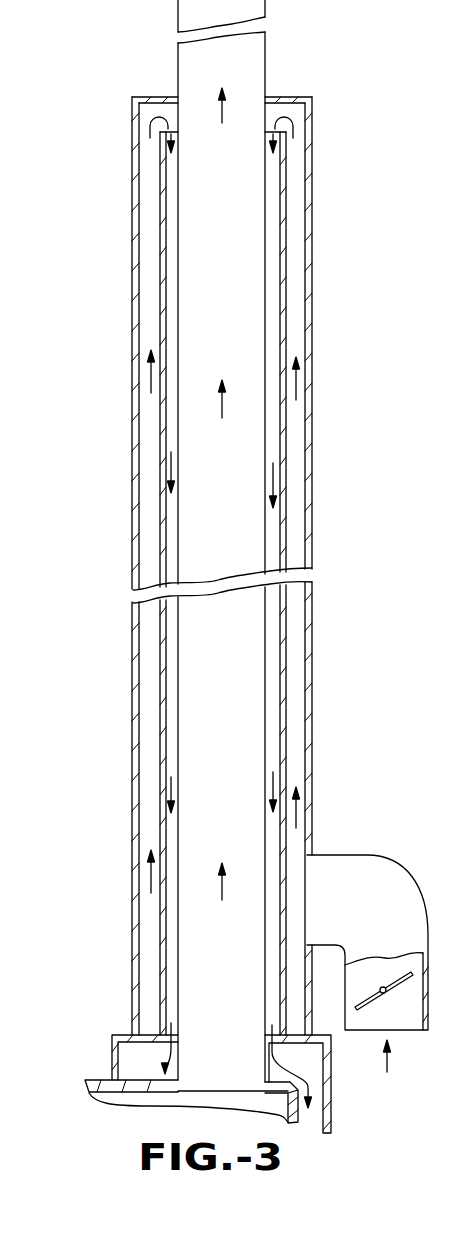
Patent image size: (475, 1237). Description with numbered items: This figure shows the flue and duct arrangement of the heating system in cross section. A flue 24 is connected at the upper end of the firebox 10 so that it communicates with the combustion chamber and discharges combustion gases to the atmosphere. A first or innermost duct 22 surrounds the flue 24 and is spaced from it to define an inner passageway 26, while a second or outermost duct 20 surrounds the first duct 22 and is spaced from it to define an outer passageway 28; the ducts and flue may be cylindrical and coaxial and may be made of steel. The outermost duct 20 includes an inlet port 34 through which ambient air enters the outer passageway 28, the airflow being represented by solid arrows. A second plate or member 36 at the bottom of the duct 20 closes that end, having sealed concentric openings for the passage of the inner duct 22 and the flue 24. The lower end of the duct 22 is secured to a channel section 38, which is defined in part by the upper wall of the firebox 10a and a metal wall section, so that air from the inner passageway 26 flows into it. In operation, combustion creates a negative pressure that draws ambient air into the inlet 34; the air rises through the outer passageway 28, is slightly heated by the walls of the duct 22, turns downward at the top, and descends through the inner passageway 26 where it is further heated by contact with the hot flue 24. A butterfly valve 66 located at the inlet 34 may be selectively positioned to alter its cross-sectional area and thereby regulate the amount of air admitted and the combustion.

The firebox 10 is at (100, 1078).
The upper wall of the firebox 10a is at (122, 1088).
The second or outermost duct 20 is at (312, 212).
The first or innermost duct 22 is at (284, 300).
The flue 24 is at (257, 68).
The inner passageway 26 is at (272, 335).
The outer passageway 28 is at (150, 270).
The inlet port 34 is at (388, 872).
The second plate or member 36 is at (147, 1037).
The channel section 38 is at (331, 1100).
The butterfly valve 66 is at (402, 985).